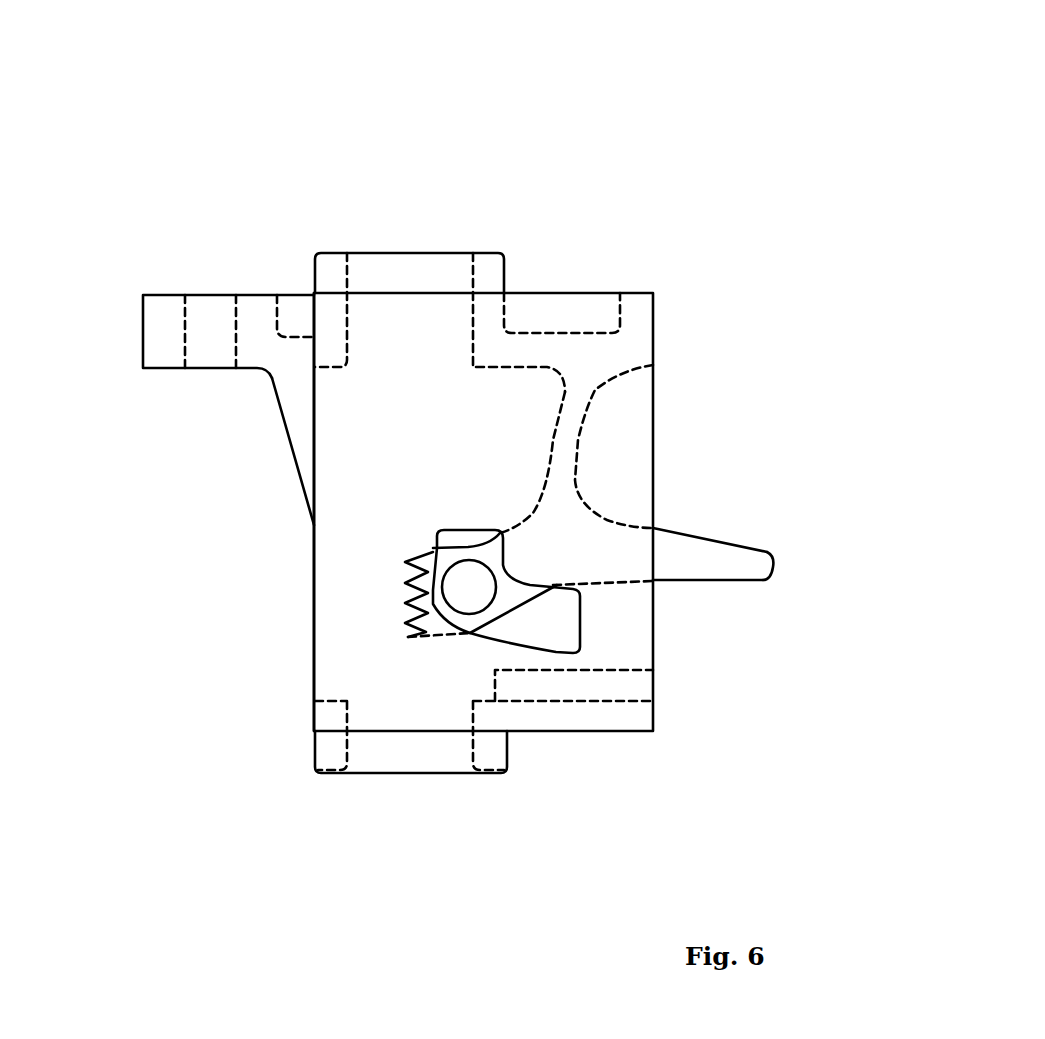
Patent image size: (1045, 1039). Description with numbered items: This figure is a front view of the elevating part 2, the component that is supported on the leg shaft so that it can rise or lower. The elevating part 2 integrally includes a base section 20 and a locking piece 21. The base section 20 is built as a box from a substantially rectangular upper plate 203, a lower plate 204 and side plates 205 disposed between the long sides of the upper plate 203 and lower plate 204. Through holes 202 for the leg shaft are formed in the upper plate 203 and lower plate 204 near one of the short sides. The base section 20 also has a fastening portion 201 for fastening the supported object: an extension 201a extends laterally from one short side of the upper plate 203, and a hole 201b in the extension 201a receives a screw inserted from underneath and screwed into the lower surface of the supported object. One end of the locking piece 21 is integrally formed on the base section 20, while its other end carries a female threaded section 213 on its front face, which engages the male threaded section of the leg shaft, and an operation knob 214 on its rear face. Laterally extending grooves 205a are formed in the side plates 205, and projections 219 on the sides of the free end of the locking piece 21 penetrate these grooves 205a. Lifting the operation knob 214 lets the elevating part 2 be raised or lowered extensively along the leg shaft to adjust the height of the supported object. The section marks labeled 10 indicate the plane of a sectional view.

The elevating part 2 is at (550, 148).
The base section 20 is at (330, 603).
The fastening portion 201 is at (167, 295).
The extension 201a is at (254, 295).
The hole 201b is at (205, 320).
The through holes 202 is at (408, 267).
The upper plate 203 is at (577, 292).
The lower plate 204 is at (577, 732).
The side plates 205 is at (345, 457).
The grooves 205a is at (562, 617).
The locking piece 21 is at (692, 552).
The female threaded section 213 is at (413, 573).
The operation knob 214 is at (762, 568).
The projections 219 is at (469, 587).
The section line 10 is at (95, 511).